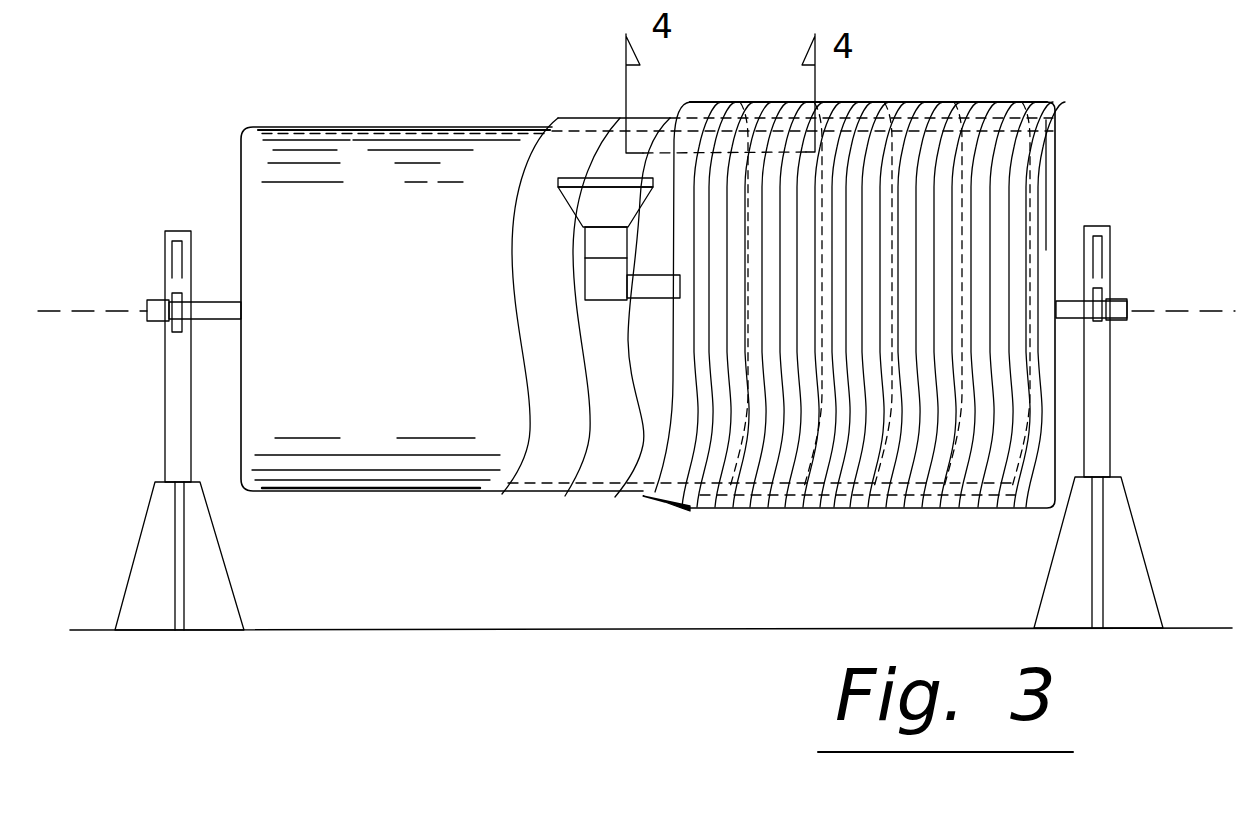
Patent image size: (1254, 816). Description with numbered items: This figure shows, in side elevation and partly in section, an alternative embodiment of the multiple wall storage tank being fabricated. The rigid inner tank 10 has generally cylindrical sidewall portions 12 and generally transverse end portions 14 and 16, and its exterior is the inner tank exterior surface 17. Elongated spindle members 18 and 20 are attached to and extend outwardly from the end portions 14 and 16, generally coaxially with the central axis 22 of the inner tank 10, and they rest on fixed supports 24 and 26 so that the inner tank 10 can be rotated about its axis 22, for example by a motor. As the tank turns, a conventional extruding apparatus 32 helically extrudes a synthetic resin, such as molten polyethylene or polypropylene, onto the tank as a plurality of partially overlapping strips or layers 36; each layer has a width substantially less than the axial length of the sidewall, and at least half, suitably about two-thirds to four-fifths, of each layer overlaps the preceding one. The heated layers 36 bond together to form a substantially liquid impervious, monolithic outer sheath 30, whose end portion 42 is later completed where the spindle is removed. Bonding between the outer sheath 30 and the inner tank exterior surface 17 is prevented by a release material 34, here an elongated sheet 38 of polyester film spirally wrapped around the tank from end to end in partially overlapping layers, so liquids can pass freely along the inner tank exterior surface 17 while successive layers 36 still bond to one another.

The inner tank 10 is at (317, 118).
The cylindrical sidewall portions 12 is at (467, 463).
The end portion 14 is at (241, 168).
The end portion 16 is at (1025, 172).
The inner tank exterior surface 17 is at (365, 457).
The spindle member 18 is at (152, 302).
The spindle member 20 is at (1122, 299).
The central axis 22 is at (1168, 306).
The fixed support 24 is at (176, 407).
The fixed support 26 is at (1106, 415).
The outer sheath 30 is at (881, 96).
The extruding apparatus 32 is at (578, 220).
The release material 34 is at (592, 113).
The partially overlapping strips or layers 36 is at (838, 512).
The elongated sheet of release material 38 is at (740, 101).
The end portion of the outer sheath 42 is at (1057, 117).